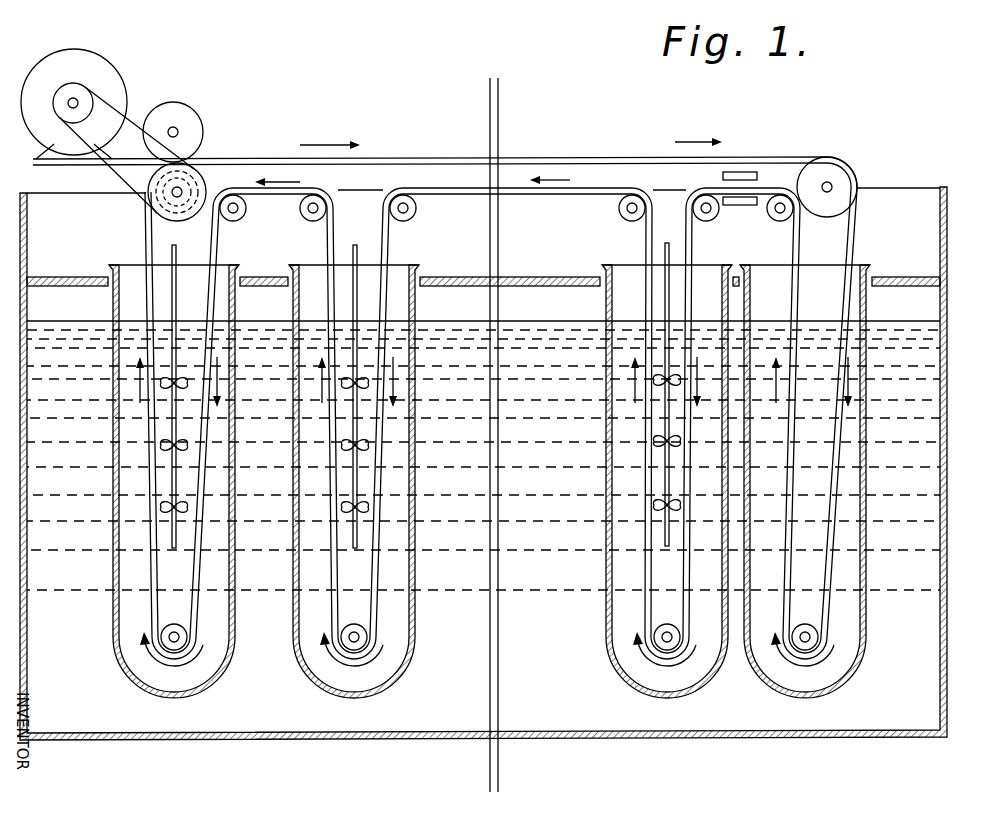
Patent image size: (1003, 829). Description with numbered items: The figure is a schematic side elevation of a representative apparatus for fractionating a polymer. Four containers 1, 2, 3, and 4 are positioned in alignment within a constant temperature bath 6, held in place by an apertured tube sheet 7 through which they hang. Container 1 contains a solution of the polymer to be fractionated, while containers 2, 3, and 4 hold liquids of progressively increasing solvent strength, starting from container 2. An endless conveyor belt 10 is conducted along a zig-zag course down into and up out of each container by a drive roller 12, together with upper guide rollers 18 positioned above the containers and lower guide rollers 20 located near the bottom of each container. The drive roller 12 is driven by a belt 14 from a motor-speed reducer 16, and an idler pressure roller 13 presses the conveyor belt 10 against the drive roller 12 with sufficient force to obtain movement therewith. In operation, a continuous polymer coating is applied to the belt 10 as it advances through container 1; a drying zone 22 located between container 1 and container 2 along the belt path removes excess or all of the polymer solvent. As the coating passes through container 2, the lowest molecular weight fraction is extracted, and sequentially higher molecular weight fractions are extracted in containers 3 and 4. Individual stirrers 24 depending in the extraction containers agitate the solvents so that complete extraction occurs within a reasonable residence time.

The container 1 is at (870, 578).
The container 2 is at (665, 697).
The container 3 is at (353, 700).
The container 4 is at (177, 700).
The constant temperature bath 6 is at (947, 440).
The apertured tube sheet 7 is at (900, 276).
The endless conveyor belt 10 is at (772, 177).
The drive roller 12 is at (203, 168).
The idler pressure roller 13 is at (205, 125).
The belt 14 is at (135, 122).
The motor-speed reducer 16 is at (108, 66).
The upper guide rollers 18 is at (305, 218).
The lower guide rollers 20 is at (181, 648).
The drying zone 22 is at (808, 176).
The stirrers 24 is at (352, 541).